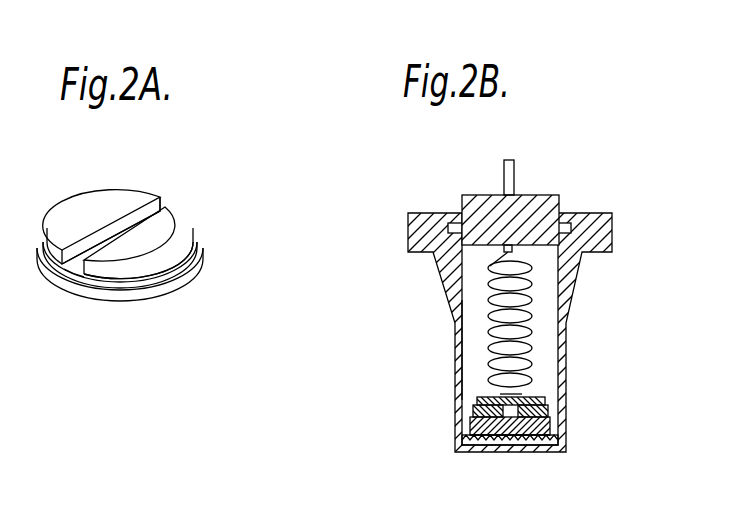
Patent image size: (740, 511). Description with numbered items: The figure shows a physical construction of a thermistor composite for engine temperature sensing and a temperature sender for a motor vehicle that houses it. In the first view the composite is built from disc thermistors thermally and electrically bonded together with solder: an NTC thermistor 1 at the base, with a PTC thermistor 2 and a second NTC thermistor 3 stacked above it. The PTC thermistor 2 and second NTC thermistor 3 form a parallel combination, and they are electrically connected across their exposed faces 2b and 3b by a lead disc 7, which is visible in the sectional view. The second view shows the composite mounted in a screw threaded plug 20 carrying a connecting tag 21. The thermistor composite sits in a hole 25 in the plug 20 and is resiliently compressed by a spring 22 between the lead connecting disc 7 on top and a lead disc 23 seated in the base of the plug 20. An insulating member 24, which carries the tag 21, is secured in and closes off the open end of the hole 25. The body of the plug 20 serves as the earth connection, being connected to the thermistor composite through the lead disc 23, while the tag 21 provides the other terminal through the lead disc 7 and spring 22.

In FIG. 2A, the NTC thermistor 1 is at (203, 258).
In FIG. 2B, the NTC thermistor 1 is at (565, 427).
In FIG. 2A, the PTC thermistor 2 is at (187, 213).
In FIG. 2B, the PTC thermistor 2 is at (473, 412).
In FIG. 2A, the second NTC thermistor 3 is at (135, 193).
In FIG. 2B, the second NTC thermistor 3 is at (548, 411).
In FIG. 2A, the exposed face of second NTC thermistor 3b is at (80, 203).
In FIG. 2A, the exposed face of PTC thermistor 2b is at (164, 249).
In FIG. 2B, the lead disc 7 is at (545, 398).
In FIG. 2B, the screw threaded plug 20 is at (569, 263).
In FIG. 2B, the connecting tag 21 is at (515, 168).
In FIG. 2B, the spring 22 is at (533, 323).
In FIG. 2B, the lead disc 23 is at (507, 443).
In FIG. 2B, the insulating member 24 is at (538, 205).
In FIG. 2B, the hole 25 is at (552, 365).